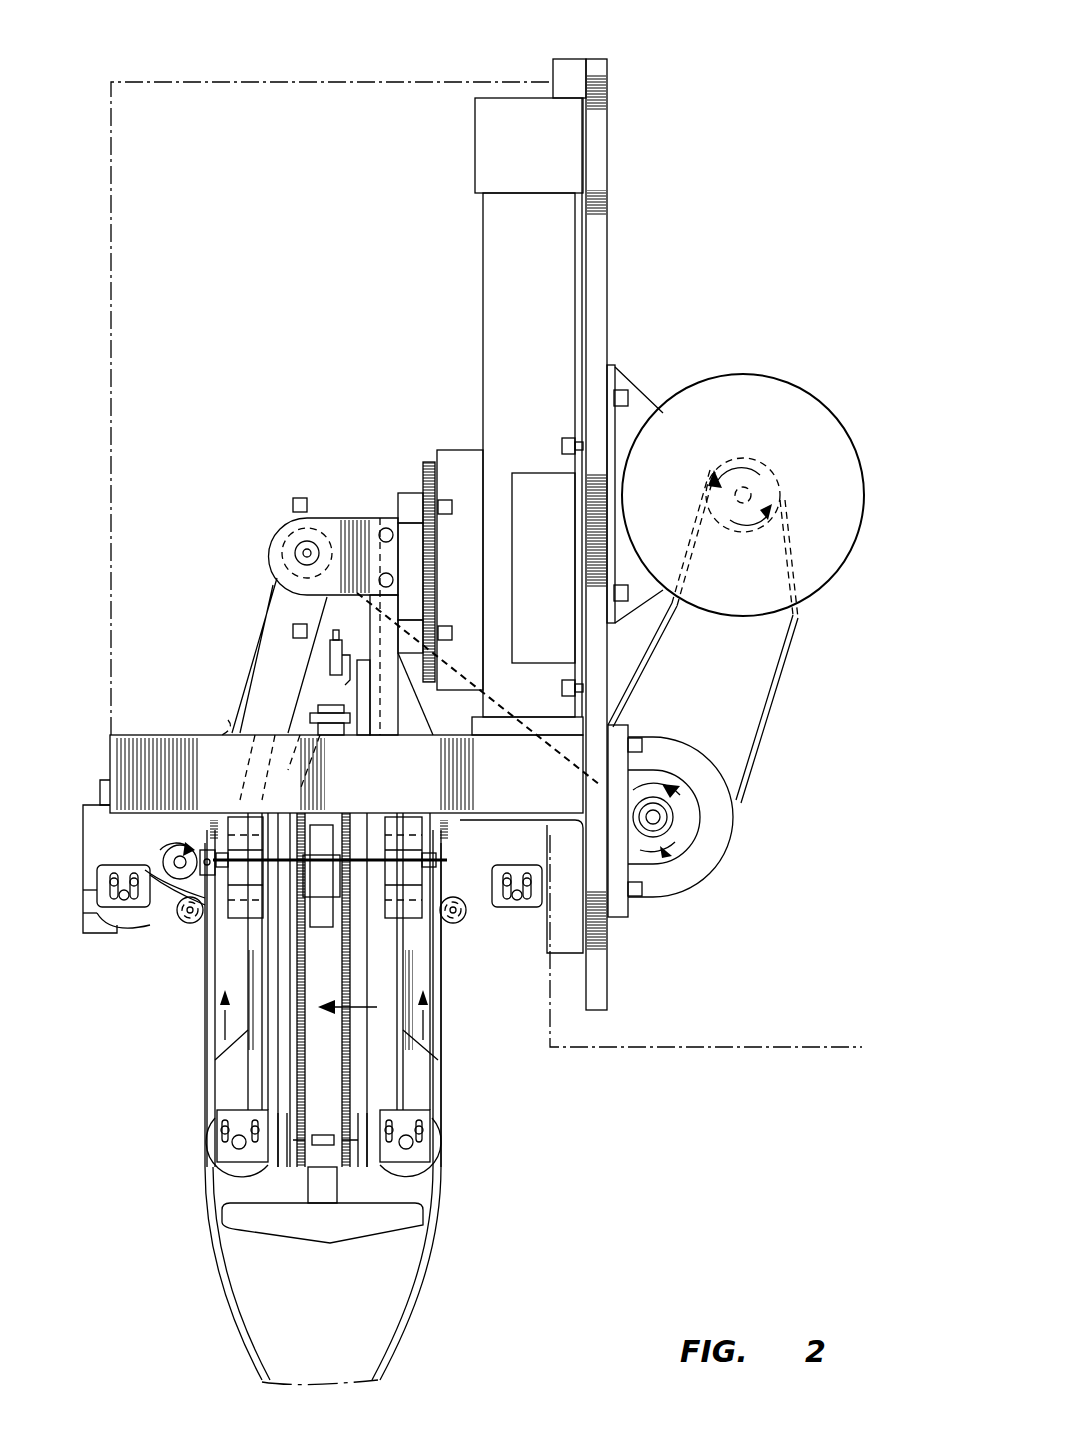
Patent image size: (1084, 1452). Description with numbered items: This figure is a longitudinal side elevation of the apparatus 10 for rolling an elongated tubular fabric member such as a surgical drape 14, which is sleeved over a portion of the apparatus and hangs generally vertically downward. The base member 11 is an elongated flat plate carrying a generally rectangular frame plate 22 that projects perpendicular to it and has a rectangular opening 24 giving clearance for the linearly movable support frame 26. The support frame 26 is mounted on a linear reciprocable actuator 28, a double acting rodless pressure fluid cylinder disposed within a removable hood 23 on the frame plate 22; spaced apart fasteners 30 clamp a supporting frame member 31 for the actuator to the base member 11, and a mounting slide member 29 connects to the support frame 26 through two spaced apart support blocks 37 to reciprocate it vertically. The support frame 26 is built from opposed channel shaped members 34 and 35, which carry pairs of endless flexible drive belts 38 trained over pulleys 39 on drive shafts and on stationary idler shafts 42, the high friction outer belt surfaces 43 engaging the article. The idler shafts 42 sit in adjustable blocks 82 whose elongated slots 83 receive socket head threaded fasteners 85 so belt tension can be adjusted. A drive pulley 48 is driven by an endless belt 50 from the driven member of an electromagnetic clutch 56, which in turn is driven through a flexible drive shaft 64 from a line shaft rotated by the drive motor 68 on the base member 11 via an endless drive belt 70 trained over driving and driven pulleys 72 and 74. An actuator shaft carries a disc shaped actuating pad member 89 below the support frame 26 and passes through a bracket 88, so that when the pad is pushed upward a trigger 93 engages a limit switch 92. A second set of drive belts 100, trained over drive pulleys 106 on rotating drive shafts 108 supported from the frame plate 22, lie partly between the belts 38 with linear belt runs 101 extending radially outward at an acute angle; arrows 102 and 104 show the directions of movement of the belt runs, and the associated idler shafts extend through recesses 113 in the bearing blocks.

The apparatus 10 is at (257, 62).
The base member 11 is at (608, 138).
The surgical drape 14 is at (390, 1343).
The frame plate 22 is at (115, 765).
The removable hood 23 is at (386, 82).
The rectangular opening 24 is at (226, 718).
The support frame 26 is at (440, 1100).
The linear reciprocable actuator 28 is at (498, 283).
The mounting slide member 29 is at (475, 555).
The fasteners 30 is at (562, 445).
The supporting frame member 31 is at (575, 545).
The channel shaped member 34 is at (250, 920).
The channel shaped member 35 is at (395, 605).
The support blocks 37 is at (410, 493).
The drive belts 38 is at (207, 1005).
The pulleys 39 is at (248, 1168).
The idler shafts 42 is at (232, 1143).
The outer belt surfaces 43 is at (205, 1058).
The drive pulley 48 is at (420, 696).
The endless belt 50 is at (258, 646).
The electromagnetic clutch 56 is at (262, 553).
The flexible drive shaft 64 is at (560, 755).
The drive motor 68 is at (770, 372).
The endless drive belt 70 is at (760, 700).
The driving pulley 72 is at (776, 500).
The driven pulley 74 is at (737, 830).
The blocks 82 is at (430, 1150).
The elongated slots 83 is at (97, 905).
The threaded fasteners 85 is at (97, 882).
The bracket 88 is at (370, 710).
The actuating pad member 89 is at (335, 1250).
The limit switch 92 is at (330, 655).
The trigger 93 is at (338, 712).
The drive belts 100 is at (322, 820).
The linear belt run 101 is at (192, 915).
The arrow 102 is at (178, 920).
The arrow 104 is at (375, 1000).
The drive pulleys 106 is at (150, 830).
The drive shafts 108 is at (212, 800).
The recesses 113 is at (125, 925).